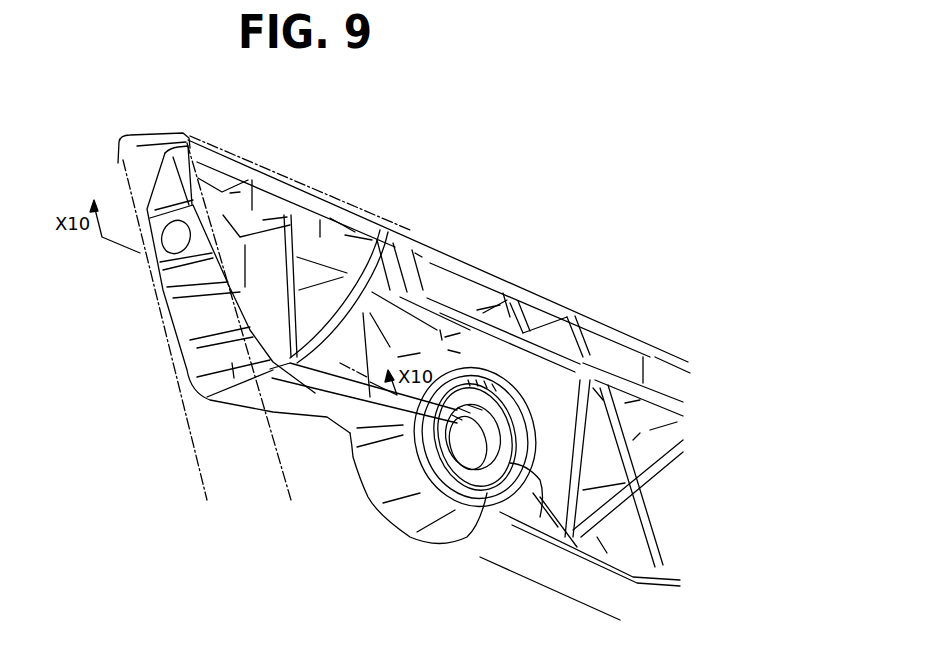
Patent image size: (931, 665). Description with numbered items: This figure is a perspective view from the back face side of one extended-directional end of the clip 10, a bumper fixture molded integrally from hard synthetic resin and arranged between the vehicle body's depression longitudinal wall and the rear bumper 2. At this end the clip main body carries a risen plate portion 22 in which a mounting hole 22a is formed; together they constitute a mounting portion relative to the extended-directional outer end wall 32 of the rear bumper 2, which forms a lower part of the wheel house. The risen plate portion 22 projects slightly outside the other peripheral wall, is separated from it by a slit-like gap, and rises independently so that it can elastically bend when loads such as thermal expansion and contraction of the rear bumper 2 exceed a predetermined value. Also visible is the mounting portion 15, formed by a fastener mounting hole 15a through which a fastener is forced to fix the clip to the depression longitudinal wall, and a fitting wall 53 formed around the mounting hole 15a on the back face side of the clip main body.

The rear bumper 2 is at (358, 199).
The extended-directional outer end wall 32 is at (130, 158).
The clip 10 is at (545, 238).
The risen plate portion 22 is at (214, 289).
The mounting hole 22a is at (173, 243).
The mounting portion 15 is at (441, 485).
The fastener mounting hole 15a is at (455, 450).
The fitting wall 53 is at (533, 490).